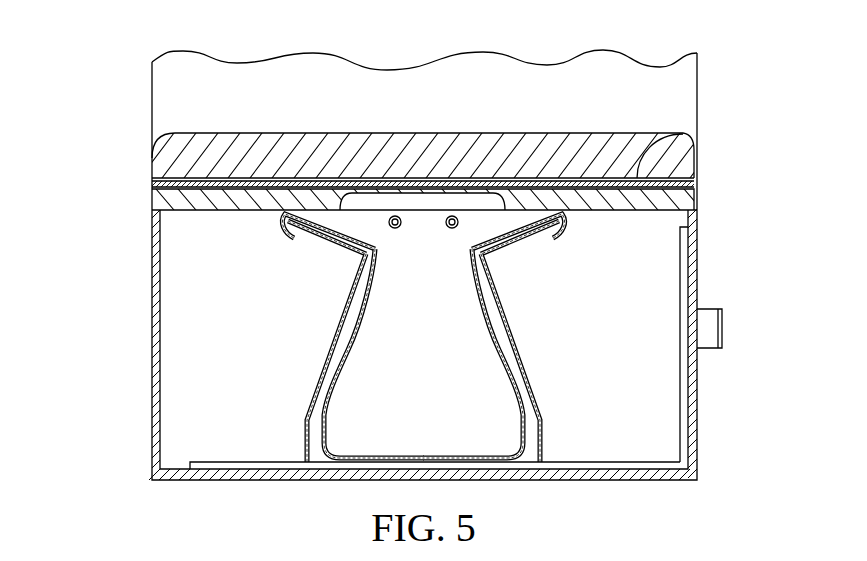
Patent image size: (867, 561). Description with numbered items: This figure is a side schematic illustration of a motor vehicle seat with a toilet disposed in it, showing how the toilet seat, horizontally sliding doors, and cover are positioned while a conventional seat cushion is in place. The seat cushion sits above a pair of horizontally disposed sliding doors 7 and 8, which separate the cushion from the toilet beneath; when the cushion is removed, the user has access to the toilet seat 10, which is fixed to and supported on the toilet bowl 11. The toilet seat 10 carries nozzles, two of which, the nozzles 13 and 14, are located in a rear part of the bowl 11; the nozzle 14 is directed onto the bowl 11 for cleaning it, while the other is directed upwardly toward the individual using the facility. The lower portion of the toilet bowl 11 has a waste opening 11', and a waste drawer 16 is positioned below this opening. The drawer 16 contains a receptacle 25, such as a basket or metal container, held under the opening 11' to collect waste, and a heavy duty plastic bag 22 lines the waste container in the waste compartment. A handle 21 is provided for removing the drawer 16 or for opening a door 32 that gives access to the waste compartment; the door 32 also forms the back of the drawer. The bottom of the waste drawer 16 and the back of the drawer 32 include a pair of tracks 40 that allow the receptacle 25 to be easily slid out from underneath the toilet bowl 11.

The sliding door 7 is at (212, 180).
The sliding door 8 is at (673, 133).
The toilet seat 10 is at (680, 205).
The toilet bowl 11 is at (427, 338).
The waste opening 11' is at (309, 257).
The nozzle 13 is at (395, 216).
The nozzle 14 is at (452, 216).
The waste drawer 16 is at (152, 356).
The handle 21 is at (722, 328).
The heavy duty plastic bag 22 is at (527, 413).
The receptacle 25 is at (325, 363).
The door 32 is at (690, 423).
The tracks 40 is at (232, 467).